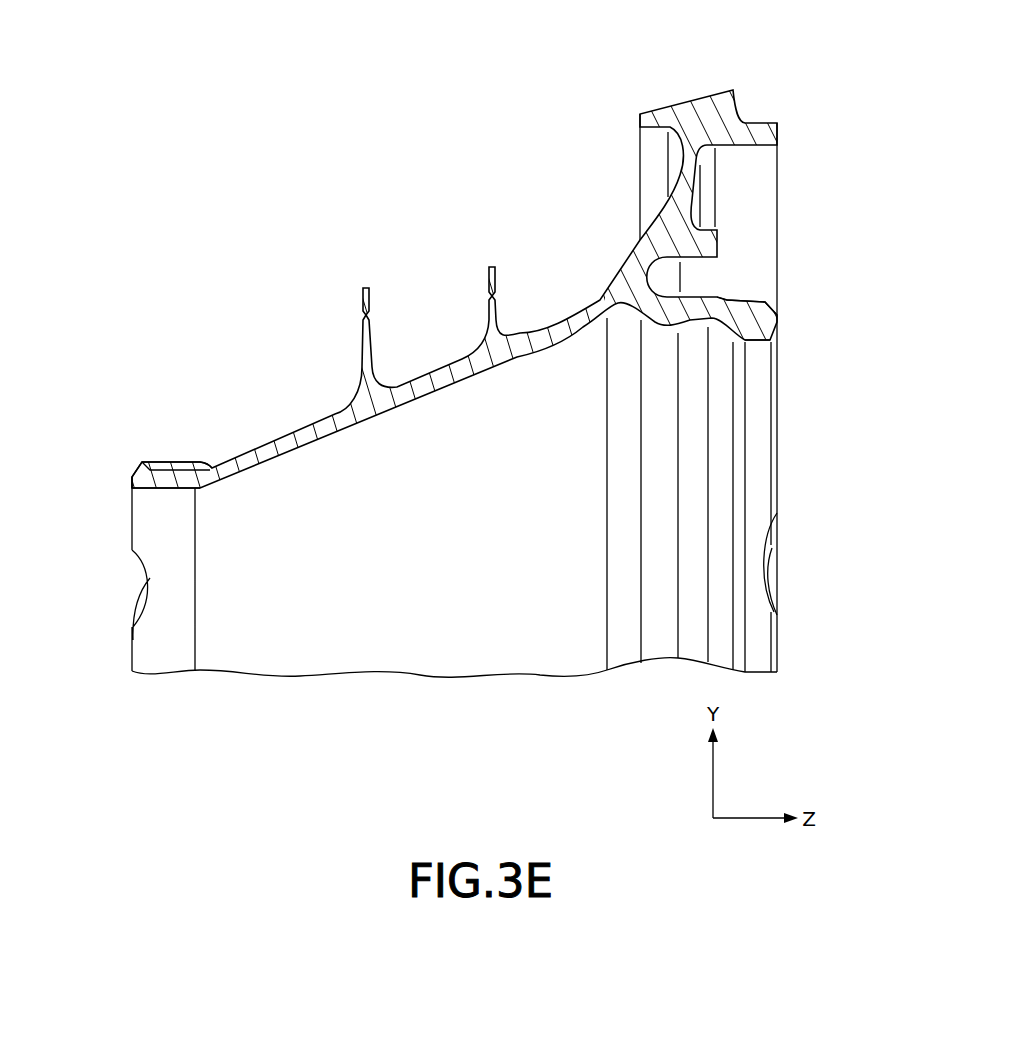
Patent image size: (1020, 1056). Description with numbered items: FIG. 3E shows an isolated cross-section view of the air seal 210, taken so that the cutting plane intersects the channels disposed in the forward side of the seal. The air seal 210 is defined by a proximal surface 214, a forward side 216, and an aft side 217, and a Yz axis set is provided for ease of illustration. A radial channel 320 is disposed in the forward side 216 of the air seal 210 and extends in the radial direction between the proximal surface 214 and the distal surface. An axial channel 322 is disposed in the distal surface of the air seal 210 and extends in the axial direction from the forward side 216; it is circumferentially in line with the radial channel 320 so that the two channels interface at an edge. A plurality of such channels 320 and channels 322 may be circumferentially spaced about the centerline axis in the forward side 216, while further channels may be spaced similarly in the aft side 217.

The air seal 210 is at (466, 140).
The proximal surface 214 is at (303, 618).
The forward side 216 is at (120, 498).
The aft side 217 is at (792, 328).
The radial channel 320 is at (137, 478).
The axial channel 322 is at (187, 467).